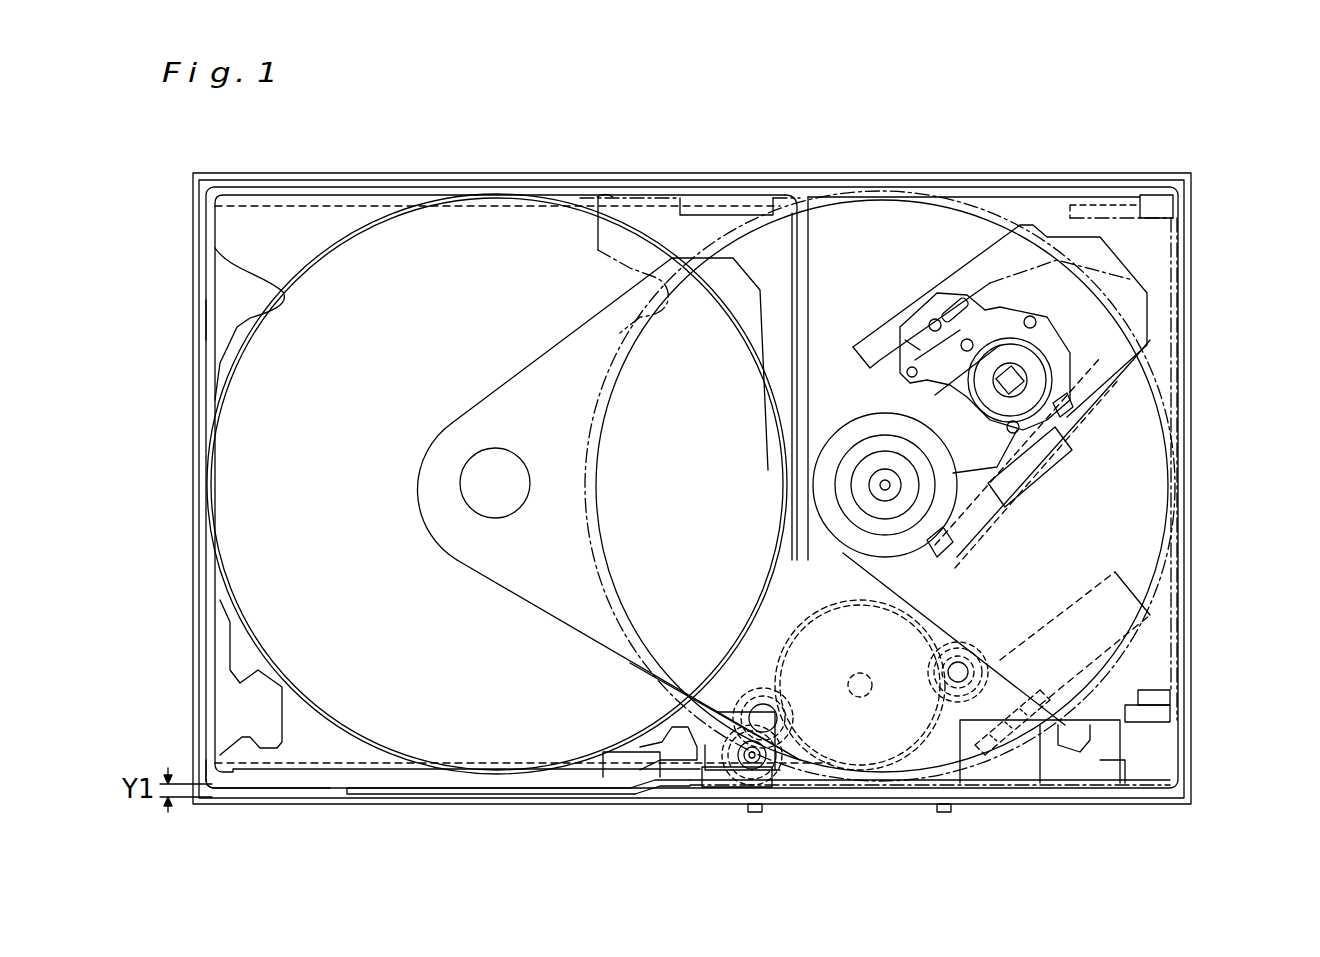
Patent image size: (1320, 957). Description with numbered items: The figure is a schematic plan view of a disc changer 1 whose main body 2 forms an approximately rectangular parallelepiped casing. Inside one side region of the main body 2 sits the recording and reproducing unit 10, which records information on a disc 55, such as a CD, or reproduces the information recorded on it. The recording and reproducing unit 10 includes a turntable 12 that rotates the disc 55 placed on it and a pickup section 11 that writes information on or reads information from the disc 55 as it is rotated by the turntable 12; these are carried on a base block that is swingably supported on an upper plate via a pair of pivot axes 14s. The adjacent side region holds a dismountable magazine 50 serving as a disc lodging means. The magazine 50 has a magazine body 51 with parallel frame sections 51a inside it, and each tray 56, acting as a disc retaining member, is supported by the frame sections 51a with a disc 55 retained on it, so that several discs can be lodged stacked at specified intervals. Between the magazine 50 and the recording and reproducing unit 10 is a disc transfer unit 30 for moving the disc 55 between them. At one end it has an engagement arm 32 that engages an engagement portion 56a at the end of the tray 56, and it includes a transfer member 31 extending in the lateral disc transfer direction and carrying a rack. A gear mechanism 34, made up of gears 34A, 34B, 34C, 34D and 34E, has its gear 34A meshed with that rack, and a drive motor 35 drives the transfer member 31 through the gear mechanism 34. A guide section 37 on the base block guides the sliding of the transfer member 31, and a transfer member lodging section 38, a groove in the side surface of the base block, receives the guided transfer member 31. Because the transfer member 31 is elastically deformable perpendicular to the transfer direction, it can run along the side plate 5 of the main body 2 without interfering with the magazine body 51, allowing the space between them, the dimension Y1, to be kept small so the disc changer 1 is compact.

The disc changer 1 is at (1208, 228).
The main body 2 is at (1193, 300).
The side plate 5 is at (763, 178).
The recording and reproducing unit 10 is at (1003, 533).
The pickup section 11 is at (1007, 300).
The turntable 12 is at (852, 445).
The pivot axes 14s is at (1160, 193).
The disc transfer unit 30 is at (510, 793).
The transfer member 31 is at (581, 794).
The engagement arm 32 is at (668, 785).
The gear mechanism 34 is at (893, 763).
The gear 34A is at (787, 790).
The gear 34B is at (812, 790).
The gear 34C is at (872, 790).
The gear 34D is at (958, 790).
The gear 34E is at (1012, 784).
The drive motor 35 is at (1112, 800).
The guide section 37 is at (708, 790).
The transfer member lodging section 38 is at (1057, 792).
The magazine 50 is at (208, 318).
The magazine body 51 is at (243, 790).
The frame sections 51a is at (280, 214).
The disc 55 is at (465, 224).
The tray 56 is at (327, 213).
The engagement portion 56a is at (720, 790).